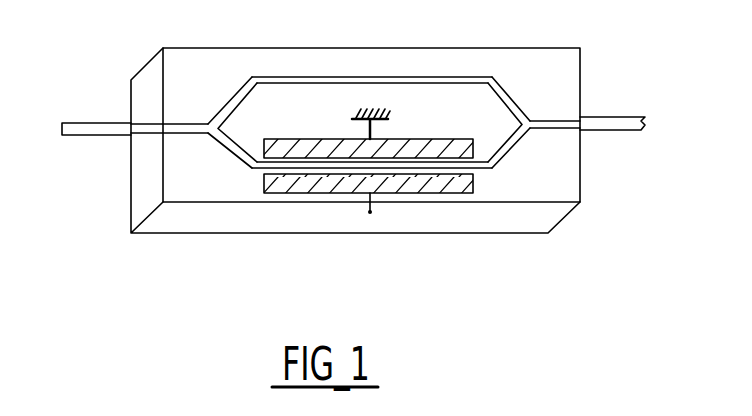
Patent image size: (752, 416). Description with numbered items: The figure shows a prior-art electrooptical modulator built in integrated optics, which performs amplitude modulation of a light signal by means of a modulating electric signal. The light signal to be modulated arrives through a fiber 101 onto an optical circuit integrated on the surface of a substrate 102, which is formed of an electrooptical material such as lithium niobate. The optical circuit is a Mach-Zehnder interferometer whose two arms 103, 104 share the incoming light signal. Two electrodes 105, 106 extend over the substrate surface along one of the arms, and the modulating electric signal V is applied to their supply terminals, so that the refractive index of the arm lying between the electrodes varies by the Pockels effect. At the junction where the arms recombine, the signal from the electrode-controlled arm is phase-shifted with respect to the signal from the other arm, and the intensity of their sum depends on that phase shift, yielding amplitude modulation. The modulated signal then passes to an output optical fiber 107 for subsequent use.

The fiber 101 is at (101, 126).
The substrate 102 is at (193, 219).
The arm 103 is at (254, 171).
The arm 104 is at (295, 77).
The electrode 105 is at (469, 189).
The electrode 106 is at (433, 150).
The output optical fiber 107 is at (593, 123).